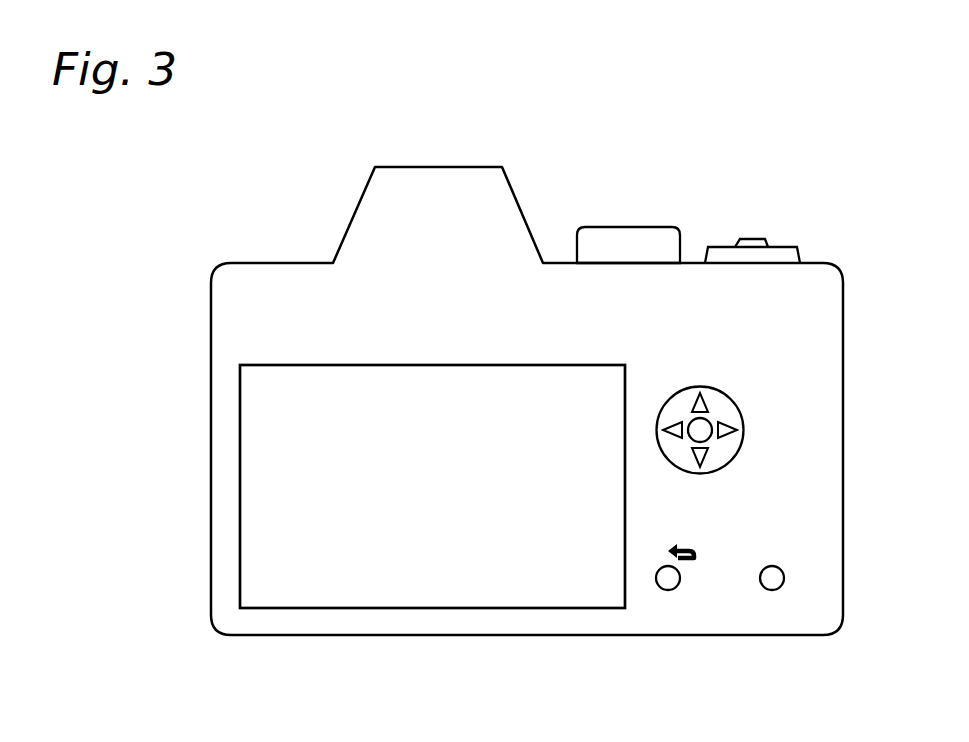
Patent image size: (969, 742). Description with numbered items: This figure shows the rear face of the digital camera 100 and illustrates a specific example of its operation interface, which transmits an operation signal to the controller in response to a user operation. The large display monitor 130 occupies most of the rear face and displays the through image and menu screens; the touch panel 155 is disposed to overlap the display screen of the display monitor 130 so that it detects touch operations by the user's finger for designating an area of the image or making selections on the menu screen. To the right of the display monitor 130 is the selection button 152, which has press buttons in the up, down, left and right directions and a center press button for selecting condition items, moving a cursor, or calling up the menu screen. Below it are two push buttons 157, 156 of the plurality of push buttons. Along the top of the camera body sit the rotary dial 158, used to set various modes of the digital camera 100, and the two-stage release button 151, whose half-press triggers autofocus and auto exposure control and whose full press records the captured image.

The digital camera 100 is at (297, 161).
The display monitor 130 is at (275, 365).
The touch panel 155 is at (275, 488).
The selection button 152 is at (732, 396).
The dial 158 is at (631, 227).
The release button 151 is at (757, 240).
The push button 157 is at (665, 591).
The push button 156 is at (773, 590).